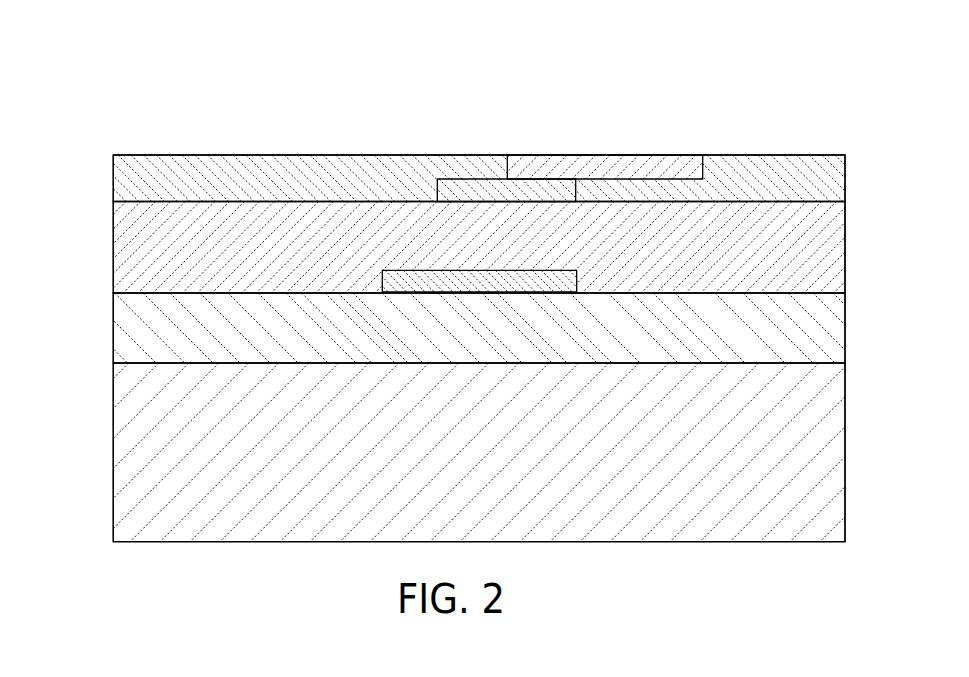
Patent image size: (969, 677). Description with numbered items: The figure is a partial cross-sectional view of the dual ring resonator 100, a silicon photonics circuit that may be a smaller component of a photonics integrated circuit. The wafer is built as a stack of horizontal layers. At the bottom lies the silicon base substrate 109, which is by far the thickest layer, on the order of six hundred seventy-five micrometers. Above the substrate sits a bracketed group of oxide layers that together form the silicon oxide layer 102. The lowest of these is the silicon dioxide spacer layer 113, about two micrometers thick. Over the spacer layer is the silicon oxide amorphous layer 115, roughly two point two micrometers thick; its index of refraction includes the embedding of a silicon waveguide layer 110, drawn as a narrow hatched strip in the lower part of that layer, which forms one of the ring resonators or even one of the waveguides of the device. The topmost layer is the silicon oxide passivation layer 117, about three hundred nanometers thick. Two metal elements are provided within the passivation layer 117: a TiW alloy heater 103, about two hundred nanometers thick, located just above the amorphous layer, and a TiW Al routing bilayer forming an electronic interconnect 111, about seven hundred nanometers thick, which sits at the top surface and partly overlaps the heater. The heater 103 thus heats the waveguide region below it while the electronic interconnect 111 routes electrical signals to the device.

The dual ring resonator 100 is at (195, 104).
The silicon oxide layer 102 is at (103, 147).
The heater 103 is at (468, 186).
The silicon base substrate 109 is at (845, 443).
The silicon waveguide layer 110 is at (485, 272).
The electronic interconnect 111 is at (620, 160).
The silicon dioxide spacer layer 113 is at (845, 330).
The silicon oxide amorphous layer 115 is at (845, 240).
The silicon oxide passivation layer 117 is at (845, 178).